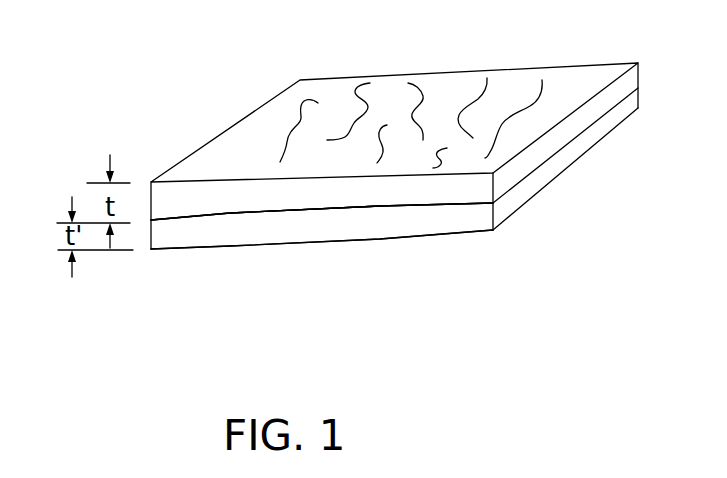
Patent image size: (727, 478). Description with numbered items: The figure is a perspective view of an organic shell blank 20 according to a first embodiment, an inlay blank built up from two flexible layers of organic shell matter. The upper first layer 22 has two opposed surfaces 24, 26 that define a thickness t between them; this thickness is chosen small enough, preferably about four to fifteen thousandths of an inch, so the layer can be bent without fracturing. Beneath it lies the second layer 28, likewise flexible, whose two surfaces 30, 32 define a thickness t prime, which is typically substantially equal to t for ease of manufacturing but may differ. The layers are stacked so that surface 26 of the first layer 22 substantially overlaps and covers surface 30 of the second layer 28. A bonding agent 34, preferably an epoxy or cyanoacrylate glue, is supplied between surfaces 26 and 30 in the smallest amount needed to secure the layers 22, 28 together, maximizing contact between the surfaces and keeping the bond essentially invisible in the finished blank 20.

The organic shell blank 20 is at (180, 53).
The first layer 22 is at (200, 167).
The surface of first layer 24 is at (247, 177).
The surface of first layer 26 is at (271, 210).
The second layer 28 is at (183, 235).
The surface of second layer 30 is at (225, 215).
The surface of second layer 32 is at (263, 246).
The bonding agent 34 is at (340, 208).